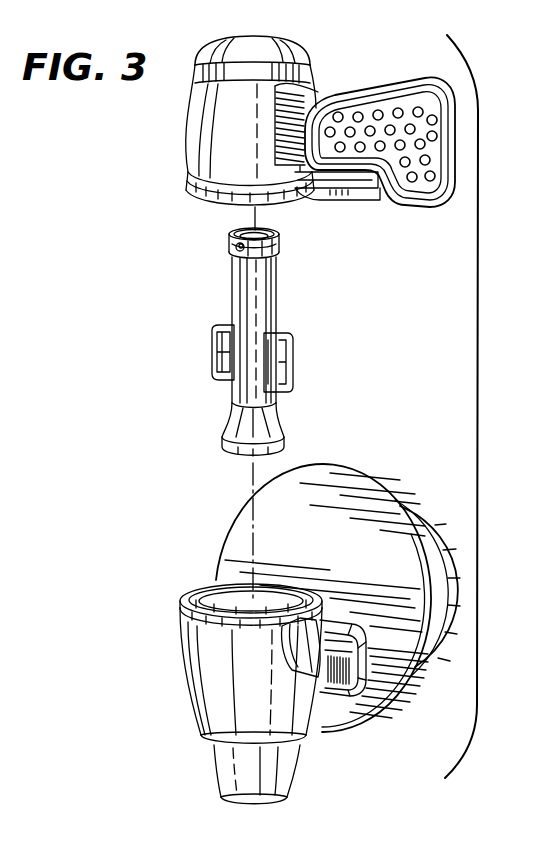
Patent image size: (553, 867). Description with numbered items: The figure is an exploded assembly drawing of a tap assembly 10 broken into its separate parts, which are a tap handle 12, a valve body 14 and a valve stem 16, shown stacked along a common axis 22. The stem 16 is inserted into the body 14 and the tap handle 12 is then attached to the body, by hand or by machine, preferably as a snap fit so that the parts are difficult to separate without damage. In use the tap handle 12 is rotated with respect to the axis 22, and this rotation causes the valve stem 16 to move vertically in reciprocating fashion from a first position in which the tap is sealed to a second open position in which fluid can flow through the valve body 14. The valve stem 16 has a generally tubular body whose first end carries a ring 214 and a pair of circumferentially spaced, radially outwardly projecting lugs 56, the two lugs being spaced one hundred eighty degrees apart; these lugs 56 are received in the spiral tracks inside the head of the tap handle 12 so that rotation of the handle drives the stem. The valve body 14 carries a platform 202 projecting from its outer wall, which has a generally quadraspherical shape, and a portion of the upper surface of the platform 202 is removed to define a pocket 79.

The tap assembly 10 is at (478, 298).
The tap handle 12 is at (232, 128).
The valve body 14 is at (197, 648).
The valve stem 16 is at (248, 303).
The axis 22 is at (245, 477).
The lugs 56 is at (236, 253).
The pocket 79 is at (336, 638).
The platform 202 is at (294, 646).
The ring 214 is at (281, 246).